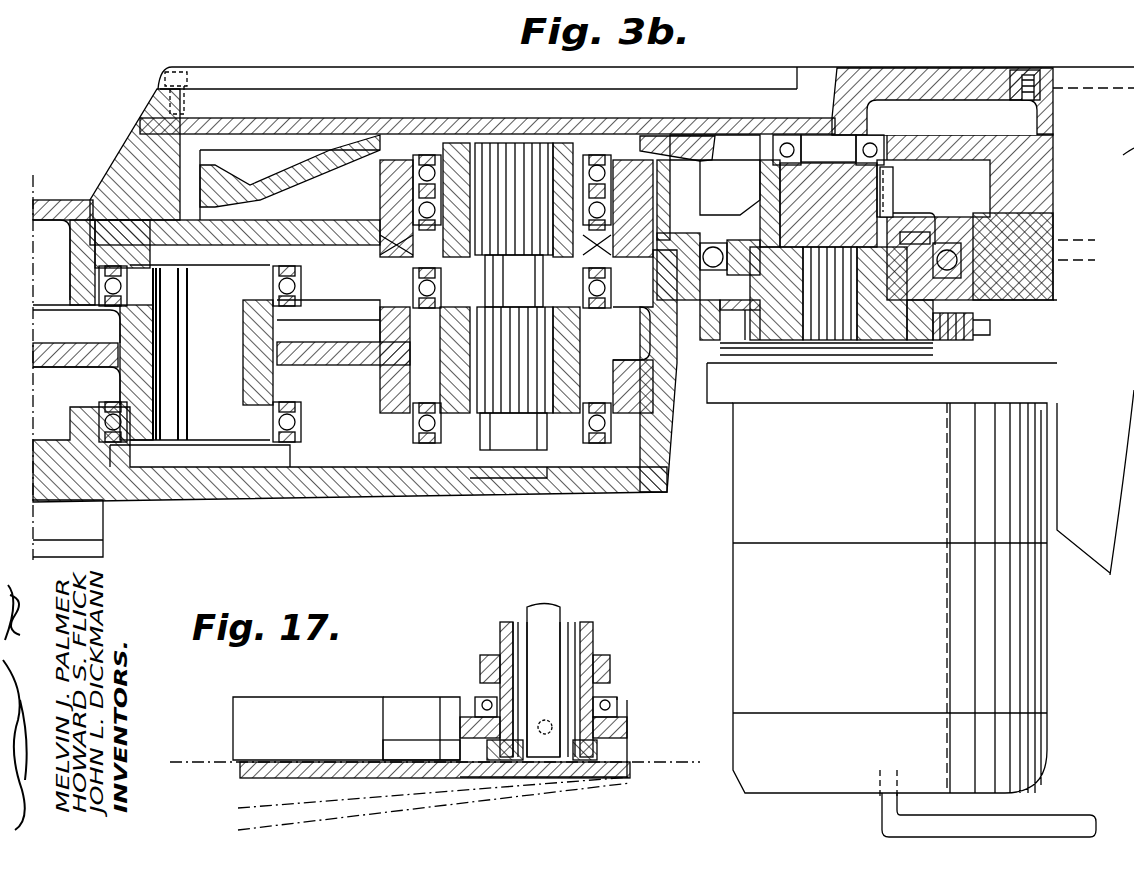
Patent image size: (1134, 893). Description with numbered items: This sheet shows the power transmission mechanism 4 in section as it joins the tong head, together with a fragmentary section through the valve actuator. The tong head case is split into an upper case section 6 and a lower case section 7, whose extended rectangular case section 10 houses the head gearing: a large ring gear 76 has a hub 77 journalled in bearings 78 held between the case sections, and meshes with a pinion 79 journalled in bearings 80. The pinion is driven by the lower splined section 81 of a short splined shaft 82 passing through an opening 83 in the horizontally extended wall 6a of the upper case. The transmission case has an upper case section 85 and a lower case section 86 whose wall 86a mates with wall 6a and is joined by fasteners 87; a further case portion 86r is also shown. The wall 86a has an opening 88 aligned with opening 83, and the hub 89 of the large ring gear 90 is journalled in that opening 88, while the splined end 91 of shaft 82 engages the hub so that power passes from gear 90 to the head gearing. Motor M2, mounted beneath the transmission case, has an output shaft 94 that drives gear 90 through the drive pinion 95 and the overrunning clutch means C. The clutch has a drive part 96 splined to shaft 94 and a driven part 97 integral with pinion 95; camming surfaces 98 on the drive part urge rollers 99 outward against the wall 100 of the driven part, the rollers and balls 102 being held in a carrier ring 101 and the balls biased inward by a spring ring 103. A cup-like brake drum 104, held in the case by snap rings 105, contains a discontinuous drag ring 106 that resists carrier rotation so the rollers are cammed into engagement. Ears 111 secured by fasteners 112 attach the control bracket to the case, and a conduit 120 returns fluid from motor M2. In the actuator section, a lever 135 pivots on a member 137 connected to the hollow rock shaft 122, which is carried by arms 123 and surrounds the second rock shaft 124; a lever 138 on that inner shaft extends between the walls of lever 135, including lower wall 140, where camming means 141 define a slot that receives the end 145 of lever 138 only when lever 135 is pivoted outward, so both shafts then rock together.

In FIG. 3B, the upper case section 85 is at (400, 62).
In FIG. 3B, the fasteners 87 is at (165, 77).
In FIG. 3B, the lower case section 86 is at (135, 147).
In FIG. 3B, the wall 86a is at (265, 215).
In FIG. 3B, the housing member right 86r is at (985, 265).
In FIG. 3B, the large ring gear 90 is at (410, 126).
In FIG. 3B, the splined end 91 is at (520, 165).
In FIG. 3B, the upper case section 6 is at (45, 200).
In FIG. 3B, the horizontally extended wall 6a is at (200, 255).
In FIG. 3B, the hub 77 is at (160, 400).
In FIG. 3B, the bearings 78 is at (270, 422).
In FIG. 3B, the large ring gear 76 is at (375, 378).
In FIG. 3B, the lower case section 7 is at (160, 490).
In FIG. 3B, the opening 88 is at (385, 285).
In FIG. 3B, the hub 89 is at (470, 290).
In FIG. 3B, the opening 83 is at (605, 285).
In FIG. 3B, the lower splined section 81 is at (515, 395).
In FIG. 3B, the bearings 80 is at (605, 425).
In FIG. 3B, the short splined shaft 82 is at (500, 445).
In FIG. 3B, the pinion 79 is at (450, 450).
In FIG. 3B, the power transmission mechanism 4 is at (875, 66).
In FIG. 3B, the rectangular case section 10 is at (945, 76).
In FIG. 3B, the ears 111 is at (1020, 70).
In FIG. 3B, the fasteners 112 is at (1035, 72).
In FIG. 3B, the drive pinion 95 is at (870, 185).
In FIG. 3B, the rollers 99 is at (790, 215).
In FIG. 3B, the driven part 97 is at (905, 225).
In FIG. 3B, the overrunning clutch means C is at (908, 245).
In FIG. 3B, the carrier ring 101 is at (920, 240).
In FIG. 3B, the wall 100 is at (735, 210).
In FIG. 3B, the output shaft 94 is at (845, 335).
In FIG. 3B, the camming surfaces 98 is at (775, 255).
In FIG. 3B, the snap rings 105 is at (960, 305).
In FIG. 3B, the balls 102 is at (760, 345).
In FIG. 3B, the drag ring 106 is at (735, 345).
In FIG. 3B, the drive part 96 is at (880, 345).
In FIG. 3B, the spring ring 103 is at (745, 358).
In FIG. 3B, the brake drum 104 is at (705, 358).
In FIG. 3B, the motor M2 is at (890, 598).
In FIG. 3B, the conduit 120 is at (1065, 815).
In FIG. 17, the lower wall 140 is at (275, 700).
In FIG. 17, the camming means 141 is at (423, 700).
In FIG. 17, the lever 135 is at (250, 780).
In FIG. 17, the end 145 is at (400, 752).
In FIG. 17, the lever 138 is at (500, 760).
In FIG. 17, the rock shaft 122 is at (593, 630).
In FIG. 17, the second rock shaft 124 is at (560, 615).
In FIG. 17, the arms 123 is at (610, 668).
In FIG. 17, the member 137 is at (630, 730).